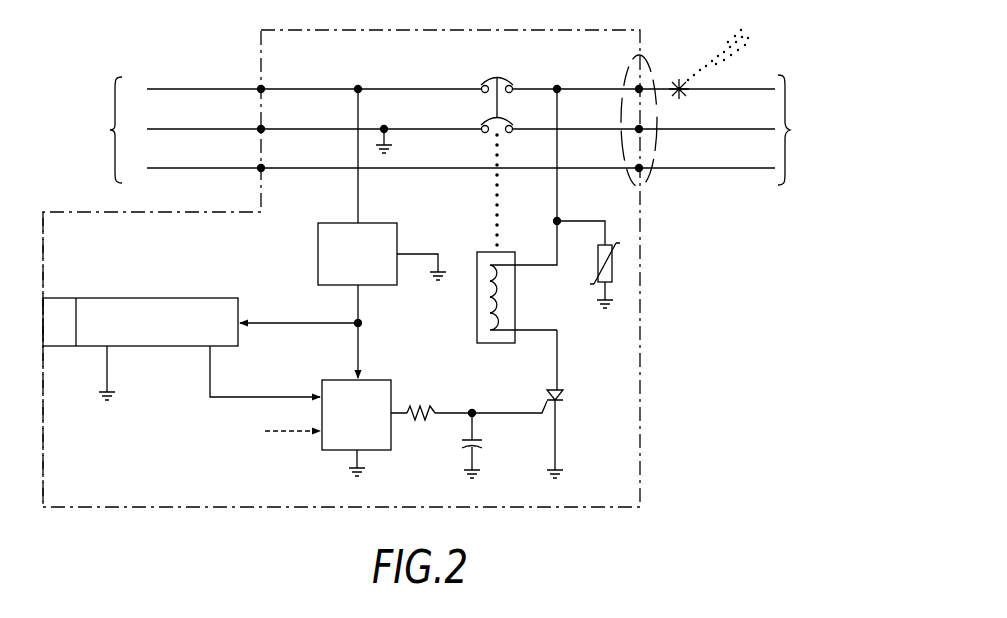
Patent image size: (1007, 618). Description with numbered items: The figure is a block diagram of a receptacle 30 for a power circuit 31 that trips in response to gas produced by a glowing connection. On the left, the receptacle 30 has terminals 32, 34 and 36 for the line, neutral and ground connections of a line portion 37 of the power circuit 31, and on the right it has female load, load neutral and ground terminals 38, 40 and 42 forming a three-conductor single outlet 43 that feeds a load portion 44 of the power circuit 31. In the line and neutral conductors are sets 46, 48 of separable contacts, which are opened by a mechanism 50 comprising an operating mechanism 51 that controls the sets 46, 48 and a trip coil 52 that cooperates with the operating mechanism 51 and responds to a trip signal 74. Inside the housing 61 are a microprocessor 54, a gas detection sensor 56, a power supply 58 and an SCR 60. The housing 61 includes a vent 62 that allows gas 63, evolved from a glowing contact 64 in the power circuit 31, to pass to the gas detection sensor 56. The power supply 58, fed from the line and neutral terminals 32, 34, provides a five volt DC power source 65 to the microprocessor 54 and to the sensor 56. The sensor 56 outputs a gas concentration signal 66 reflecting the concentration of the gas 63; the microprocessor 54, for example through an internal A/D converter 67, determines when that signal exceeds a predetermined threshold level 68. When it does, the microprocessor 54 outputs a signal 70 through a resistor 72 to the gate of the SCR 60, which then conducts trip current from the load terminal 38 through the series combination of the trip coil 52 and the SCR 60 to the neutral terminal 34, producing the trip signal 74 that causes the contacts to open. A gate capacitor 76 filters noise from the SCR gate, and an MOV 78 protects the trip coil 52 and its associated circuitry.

The receptacle 30 is at (647, 438).
The power circuit 31 is at (58, 128).
The line terminal 32 is at (259, 87).
The neutral terminal 34 is at (259, 127).
The ground terminal 36 is at (259, 166).
The line portion 37 is at (110, 134).
The load terminal 38 is at (636, 87).
The load neutral terminal 40 is at (636, 127).
The ground terminal 42 is at (636, 167).
The single outlet 43 is at (655, 163).
The load portion 44 is at (809, 130).
The set of separable contacts 46 is at (510, 80).
The set of separable contacts 48 is at (484, 123).
The mechanism 50 is at (483, 147).
The operating mechanism 51 is at (478, 76).
The trip coil 52 is at (500, 344).
The microprocessor 54 is at (377, 452).
The gas detection sensor 56 is at (158, 298).
The power supply 58 is at (381, 226).
The SCR 60 is at (565, 398).
The housing 61 is at (43, 245).
The vent 62 is at (62, 298).
The gas 63 is at (739, 38).
The glowing contact 64 is at (677, 78).
The power source 65 is at (349, 321).
The gas concentration signal 66 is at (210, 383).
The A/D converter 67 is at (321, 395).
The predetermined threshold level 68 is at (291, 435).
The signal 70 is at (407, 406).
The resistor 72 is at (428, 423).
The trip signal 74 is at (560, 353).
The gate capacitor 76 is at (481, 449).
The MOV 78 is at (622, 266).